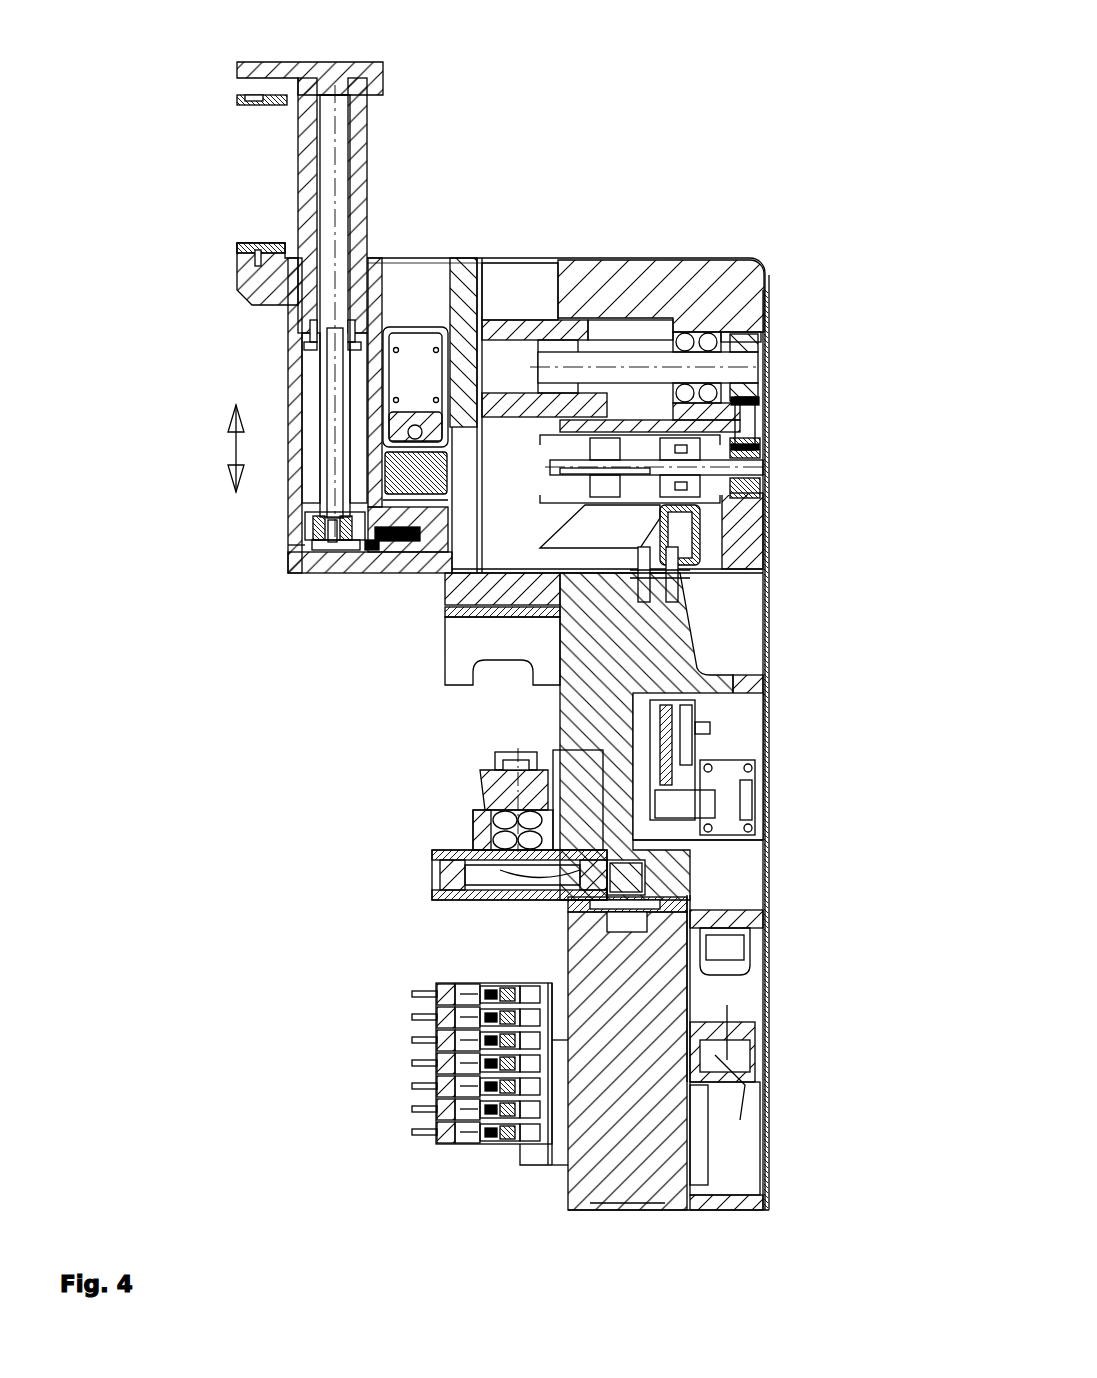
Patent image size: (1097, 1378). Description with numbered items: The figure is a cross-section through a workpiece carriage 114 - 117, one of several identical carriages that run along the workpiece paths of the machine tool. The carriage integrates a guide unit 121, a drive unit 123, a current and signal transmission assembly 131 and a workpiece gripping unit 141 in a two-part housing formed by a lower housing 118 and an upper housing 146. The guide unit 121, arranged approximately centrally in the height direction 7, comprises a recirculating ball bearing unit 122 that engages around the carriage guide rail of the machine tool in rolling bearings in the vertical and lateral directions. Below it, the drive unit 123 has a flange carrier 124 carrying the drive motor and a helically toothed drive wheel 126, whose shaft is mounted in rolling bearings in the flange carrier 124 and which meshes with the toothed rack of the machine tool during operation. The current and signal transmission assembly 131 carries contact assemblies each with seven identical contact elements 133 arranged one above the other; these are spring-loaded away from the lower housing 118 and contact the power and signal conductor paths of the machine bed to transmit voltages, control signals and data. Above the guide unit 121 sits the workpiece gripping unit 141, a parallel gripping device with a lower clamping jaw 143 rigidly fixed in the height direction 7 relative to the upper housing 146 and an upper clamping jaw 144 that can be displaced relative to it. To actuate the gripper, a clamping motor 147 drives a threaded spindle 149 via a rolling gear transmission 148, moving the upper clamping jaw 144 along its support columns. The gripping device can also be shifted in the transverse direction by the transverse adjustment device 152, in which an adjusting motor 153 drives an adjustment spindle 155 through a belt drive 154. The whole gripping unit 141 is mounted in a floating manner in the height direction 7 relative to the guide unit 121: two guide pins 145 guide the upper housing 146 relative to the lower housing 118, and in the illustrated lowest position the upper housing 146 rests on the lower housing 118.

The workpiece carriage 114 - 117 is at (708, 228).
The upper clamping jaw 144 is at (240, 100).
The workpiece gripping unit 141 is at (238, 203).
The lower clamping jaw 143 is at (247, 254).
The threaded spindle 149 is at (327, 355).
The height direction 7 is at (236, 448).
The rolling gear transmission 148 is at (363, 545).
The clamping motor 147 is at (420, 423).
The transverse adjustment device 152 is at (528, 313).
The upper housing 146 is at (610, 285).
The adjustment spindle 155 is at (672, 367).
The belt drive 154 is at (747, 422).
The adjusting motor 153 is at (738, 468).
The guide pins 145 is at (672, 563).
The lower housing 118 is at (665, 652).
The recirculating ball bearing unit 122 is at (460, 635).
The guide unit 121 is at (432, 660).
The drive wheel 126 is at (493, 785).
The drive unit 123 is at (442, 815).
The flange carrier 124 is at (497, 870).
The current and signal transmission assembly 131 is at (380, 1063).
The contact elements 133 is at (420, 993).